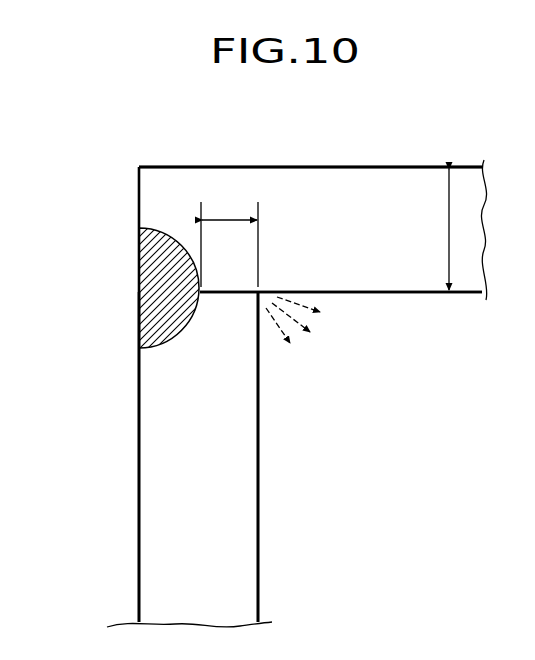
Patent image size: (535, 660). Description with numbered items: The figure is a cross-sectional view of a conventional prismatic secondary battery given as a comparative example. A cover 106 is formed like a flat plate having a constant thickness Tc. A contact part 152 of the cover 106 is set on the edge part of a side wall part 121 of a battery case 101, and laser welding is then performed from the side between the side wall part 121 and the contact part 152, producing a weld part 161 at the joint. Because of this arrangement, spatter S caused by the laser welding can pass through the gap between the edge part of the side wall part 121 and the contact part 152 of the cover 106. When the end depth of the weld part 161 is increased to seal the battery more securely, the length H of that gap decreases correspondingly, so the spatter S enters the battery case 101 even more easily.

The battery case 101 is at (130, 523).
The cover 106 is at (360, 188).
The side wall part 121 is at (158, 452).
The contact part 152 is at (183, 190).
The weld part 161 is at (142, 252).
The spatter S is at (290, 317).
The length of the gap H is at (229, 243).
The thickness Tc is at (461, 229).